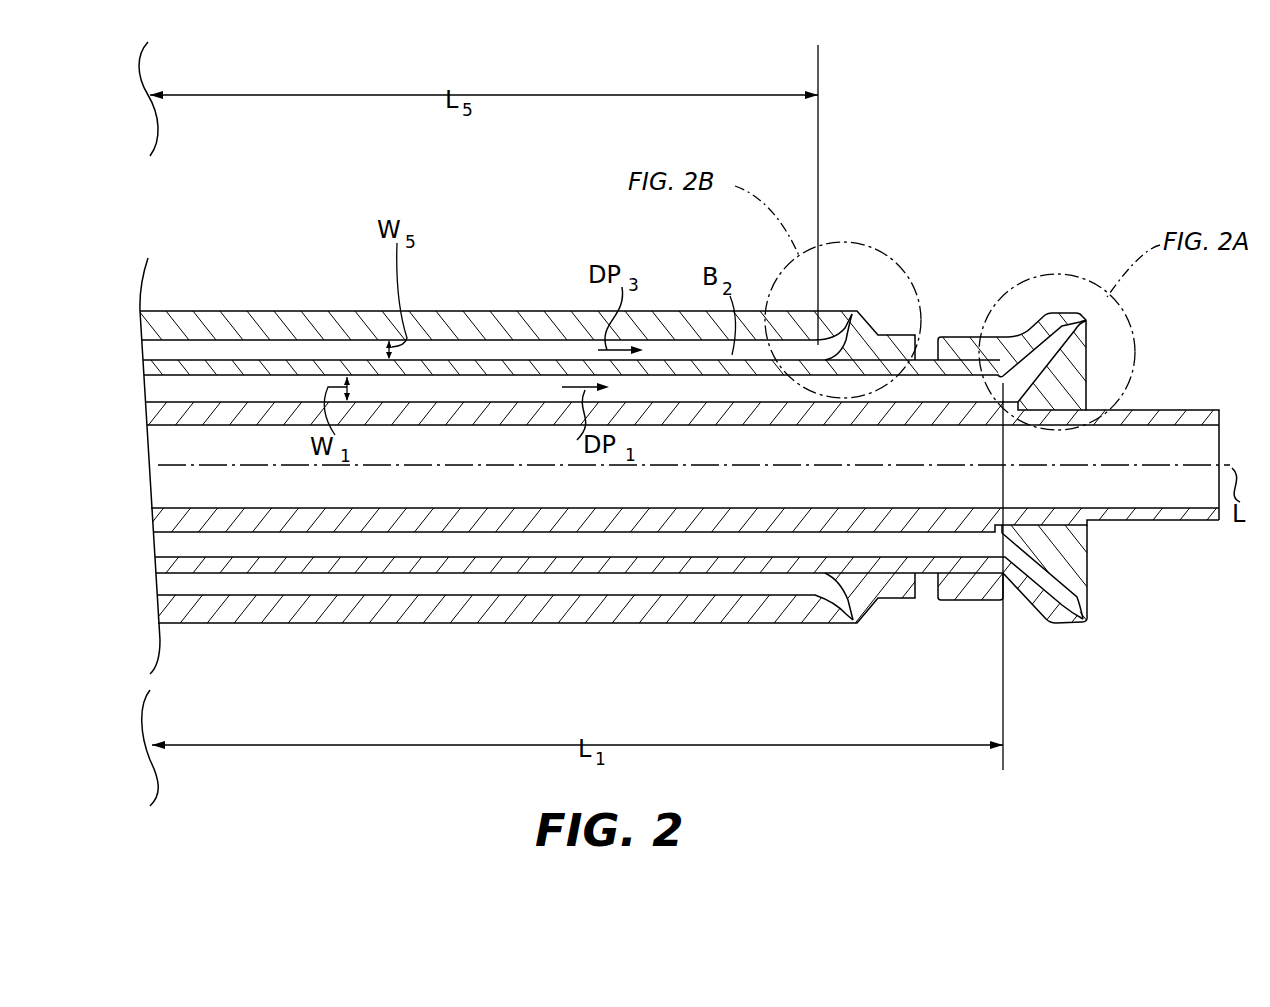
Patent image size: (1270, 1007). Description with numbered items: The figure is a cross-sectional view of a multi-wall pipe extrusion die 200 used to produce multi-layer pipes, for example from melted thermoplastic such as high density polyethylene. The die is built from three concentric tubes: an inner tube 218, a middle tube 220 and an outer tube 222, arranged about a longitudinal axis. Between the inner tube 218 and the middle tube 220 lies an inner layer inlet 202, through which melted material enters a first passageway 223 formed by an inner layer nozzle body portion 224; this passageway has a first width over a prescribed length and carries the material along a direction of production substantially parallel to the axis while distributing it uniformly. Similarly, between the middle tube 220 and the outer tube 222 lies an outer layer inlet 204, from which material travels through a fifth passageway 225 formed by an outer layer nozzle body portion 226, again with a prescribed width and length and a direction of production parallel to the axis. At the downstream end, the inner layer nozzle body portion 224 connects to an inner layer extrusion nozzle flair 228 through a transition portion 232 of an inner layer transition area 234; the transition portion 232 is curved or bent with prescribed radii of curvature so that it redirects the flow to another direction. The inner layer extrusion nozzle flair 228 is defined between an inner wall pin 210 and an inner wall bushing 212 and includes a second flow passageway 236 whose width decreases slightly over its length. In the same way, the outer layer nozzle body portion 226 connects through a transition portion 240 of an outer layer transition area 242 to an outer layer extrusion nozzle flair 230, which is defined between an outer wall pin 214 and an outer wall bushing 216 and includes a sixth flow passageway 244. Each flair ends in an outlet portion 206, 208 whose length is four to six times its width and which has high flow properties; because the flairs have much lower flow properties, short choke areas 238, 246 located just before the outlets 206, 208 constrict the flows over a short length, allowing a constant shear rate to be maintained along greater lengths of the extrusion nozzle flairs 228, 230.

The multi-wall pipe extrusion die 200 is at (284, 210).
The inner layer inlet 202 is at (153, 388).
The outer layer inlet 204 is at (147, 353).
The outlet portion 206 is at (1088, 318).
The outlet portion 208 is at (850, 345).
The inner wall pin 210 is at (1078, 375).
The inner wall bushing 212 is at (1077, 313).
The outer wall pin 214 is at (875, 350).
The outer wall bushing 216 is at (825, 340).
The inner tube 218 is at (150, 408).
The middle tube 220 is at (153, 372).
The outer tube 222 is at (253, 323).
The first passageway 223 is at (228, 390).
The inner layer nozzle body portion 224 is at (428, 383).
The fifth passageway 225 is at (183, 343).
The outer layer nozzle body portion 226 is at (333, 338).
The inner layer extrusion nozzle flair 228 is at (1038, 363).
The outer layer extrusion nozzle flair 230 is at (838, 345).
The transition portion 232 is at (1008, 385).
The inner layer transition area 234 is at (985, 383).
The second flow passageway 236 is at (1040, 350).
The choke area 238 is at (1067, 340).
The transition portion 240 is at (820, 340).
The outer layer transition area 242 is at (803, 355).
The sixth flow passageway 244 is at (840, 335).
The choke area 246 is at (860, 345).